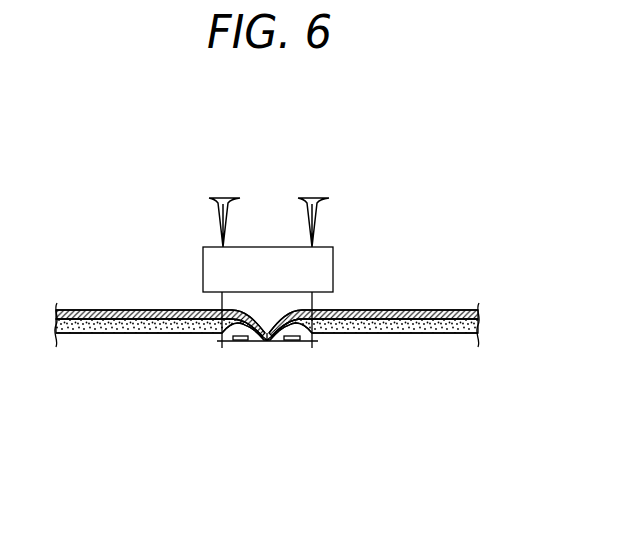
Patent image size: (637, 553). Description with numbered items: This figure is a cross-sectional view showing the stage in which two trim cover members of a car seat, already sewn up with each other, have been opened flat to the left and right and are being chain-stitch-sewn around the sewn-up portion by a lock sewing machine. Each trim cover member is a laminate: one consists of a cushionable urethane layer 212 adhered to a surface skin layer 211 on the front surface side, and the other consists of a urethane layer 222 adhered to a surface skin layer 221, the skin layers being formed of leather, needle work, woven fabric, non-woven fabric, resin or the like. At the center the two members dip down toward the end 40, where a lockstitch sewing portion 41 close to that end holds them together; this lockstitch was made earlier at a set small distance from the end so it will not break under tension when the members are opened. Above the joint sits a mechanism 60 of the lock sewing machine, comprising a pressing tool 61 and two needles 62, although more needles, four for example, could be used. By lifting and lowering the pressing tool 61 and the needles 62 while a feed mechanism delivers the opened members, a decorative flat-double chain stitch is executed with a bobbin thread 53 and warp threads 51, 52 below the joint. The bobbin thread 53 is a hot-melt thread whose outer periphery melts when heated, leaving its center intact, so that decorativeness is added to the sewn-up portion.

The end 40 is at (253, 345).
The lockstitch sewing portion 41 is at (297, 345).
The warp thread 51 is at (215, 341).
The warp thread 52 is at (325, 345).
The bobbin thread 53 is at (230, 345).
The mechanism 60 is at (319, 239).
The pressing tool 61 is at (333, 267).
The needle 62 is at (228, 217).
The surface skin layer 211 is at (467, 333).
The urethane layer 212 is at (388, 322).
The surface skin layer 221 is at (150, 333).
The urethane layer 222 is at (73, 322).